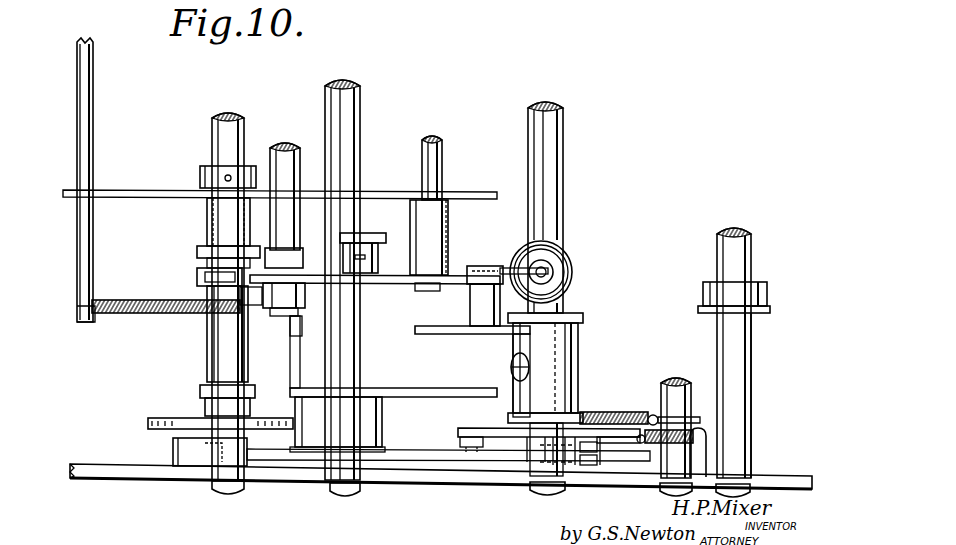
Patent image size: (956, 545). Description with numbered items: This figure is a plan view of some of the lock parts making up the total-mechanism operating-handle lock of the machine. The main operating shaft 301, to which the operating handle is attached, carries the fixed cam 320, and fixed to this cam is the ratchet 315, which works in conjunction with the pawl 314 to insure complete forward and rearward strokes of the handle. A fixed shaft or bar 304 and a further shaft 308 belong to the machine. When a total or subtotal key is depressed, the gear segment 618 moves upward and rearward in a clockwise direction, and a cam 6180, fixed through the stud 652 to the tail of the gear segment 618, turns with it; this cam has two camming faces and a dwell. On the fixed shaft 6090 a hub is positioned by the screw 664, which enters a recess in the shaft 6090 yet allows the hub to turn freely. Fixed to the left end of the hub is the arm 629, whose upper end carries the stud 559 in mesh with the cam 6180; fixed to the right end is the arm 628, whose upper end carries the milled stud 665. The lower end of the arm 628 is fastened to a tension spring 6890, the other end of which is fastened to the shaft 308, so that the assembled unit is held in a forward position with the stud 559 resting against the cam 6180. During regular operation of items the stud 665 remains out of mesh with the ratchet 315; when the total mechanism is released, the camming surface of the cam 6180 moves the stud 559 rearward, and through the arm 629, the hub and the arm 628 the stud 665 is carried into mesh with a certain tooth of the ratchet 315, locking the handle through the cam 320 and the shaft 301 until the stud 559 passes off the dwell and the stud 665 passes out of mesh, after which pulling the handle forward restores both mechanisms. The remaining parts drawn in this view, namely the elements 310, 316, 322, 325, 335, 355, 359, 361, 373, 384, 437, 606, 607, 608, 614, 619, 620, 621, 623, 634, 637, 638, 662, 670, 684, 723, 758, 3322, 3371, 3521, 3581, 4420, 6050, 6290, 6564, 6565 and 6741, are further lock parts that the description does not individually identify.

The main operating shaft 301 is at (358, 86).
The fixed shaft or bar 304 is at (210, 119).
The shaft 308 is at (675, 378).
The base plate 310 is at (768, 476).
The pawl 314 is at (598, 445).
The ratchet 315 is at (600, 462).
The bar 316 is at (480, 392).
The cam 320 is at (418, 459).
The flange 322 is at (200, 248).
The plate 325 is at (180, 420).
The rod 335 is at (205, 343).
The nut 355 is at (428, 280).
The rod 359 is at (553, 466).
The nut 361 is at (210, 487).
The clip 373 is at (458, 442).
The rod 384 is at (613, 470).
The collar 437 is at (205, 170).
The stud 559 is at (567, 334).
The bar 606 is at (93, 79).
The rod 607 is at (290, 143).
The rod 608 is at (445, 140).
The bar 614 is at (490, 192).
The gear segment 618 is at (398, 285).
The collar 619 is at (372, 237).
The block 620 is at (237, 278).
The block 621 is at (200, 285).
The block 623 is at (495, 267).
The arm 628 is at (510, 419).
The arm 629 is at (580, 318).
The sleeve 634 is at (205, 208).
The sleeve 637 is at (451, 248).
The pin 638 is at (360, 257).
The stud 652 is at (478, 308).
The collar 662 is at (255, 310).
The screw 664 is at (560, 358).
The milled stud 665 is at (538, 452).
The collar 670 is at (300, 256).
The threaded shaft 684 is at (121, 316).
The post 723 is at (766, 313).
The rod 758 is at (296, 335).
The cylinder 3322 is at (382, 410).
The collar 3371 is at (770, 293).
The block 3521 is at (173, 448).
The threaded rod 3581 is at (708, 440).
The rod 4420 is at (302, 308).
The wheel 6050 is at (548, 278).
The fixed shaft 6090 is at (565, 134).
The cam 6180 is at (524, 352).
The link 6290 is at (700, 420).
The rod 6564 is at (452, 215).
The flange 6565 is at (366, 232).
The rim 6741 is at (572, 262).
The tension spring 6890 is at (612, 412).